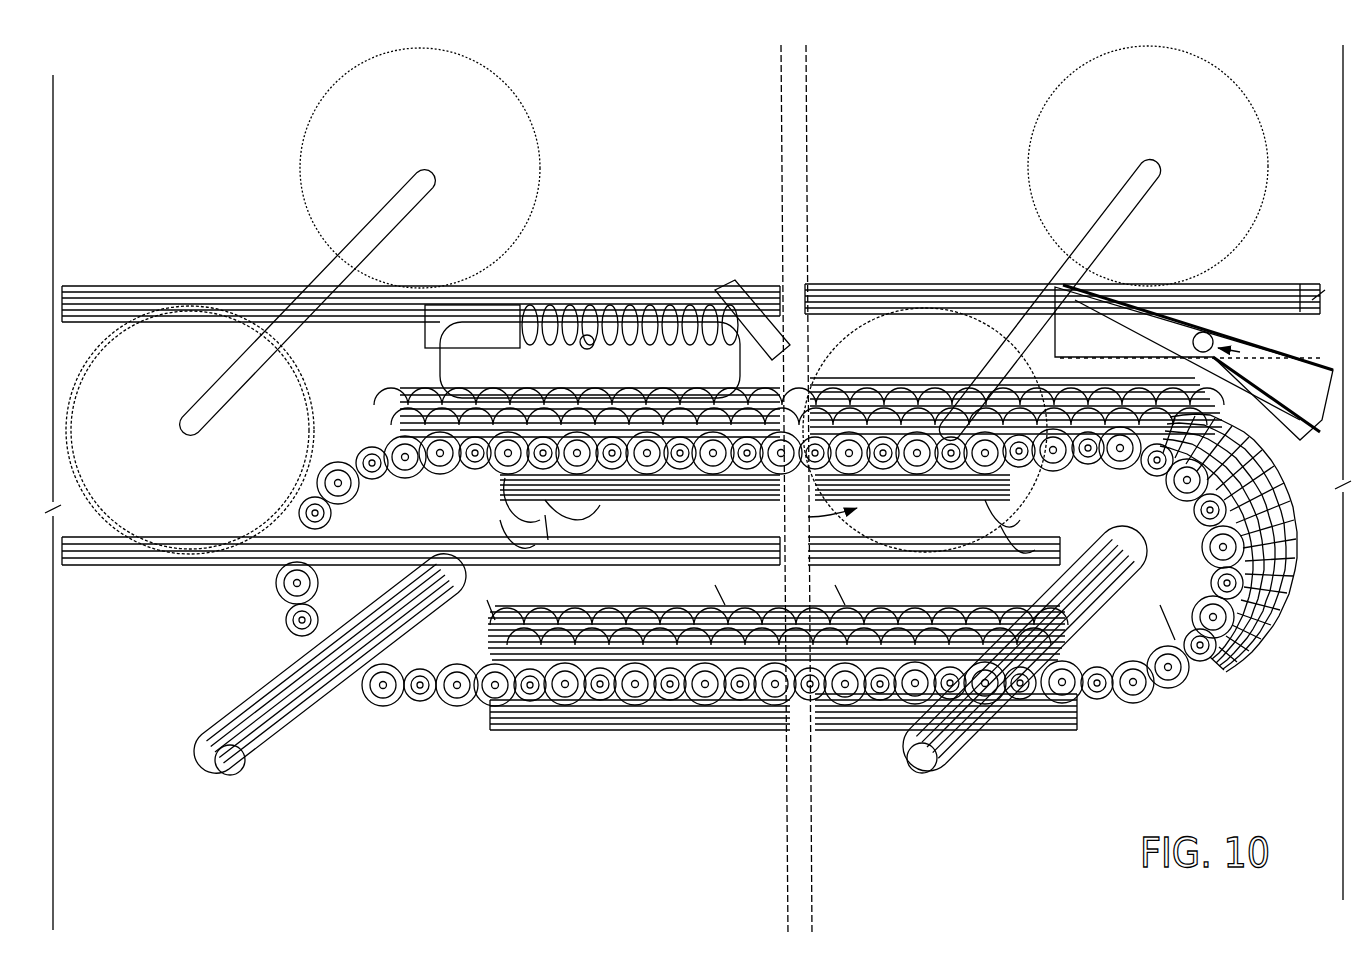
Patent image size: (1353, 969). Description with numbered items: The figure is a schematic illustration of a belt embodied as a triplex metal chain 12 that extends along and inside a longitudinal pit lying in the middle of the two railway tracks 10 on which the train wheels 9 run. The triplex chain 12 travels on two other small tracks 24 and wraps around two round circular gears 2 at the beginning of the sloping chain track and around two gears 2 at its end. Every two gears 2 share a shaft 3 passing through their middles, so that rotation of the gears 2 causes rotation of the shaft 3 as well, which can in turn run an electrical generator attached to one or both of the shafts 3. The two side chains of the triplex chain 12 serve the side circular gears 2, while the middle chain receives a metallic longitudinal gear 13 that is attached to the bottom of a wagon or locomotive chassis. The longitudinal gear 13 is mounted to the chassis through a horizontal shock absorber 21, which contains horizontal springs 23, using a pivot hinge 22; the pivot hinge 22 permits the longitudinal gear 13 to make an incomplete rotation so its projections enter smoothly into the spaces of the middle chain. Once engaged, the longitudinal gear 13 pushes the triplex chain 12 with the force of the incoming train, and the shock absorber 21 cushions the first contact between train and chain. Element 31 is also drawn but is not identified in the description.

The circular gear 2 is at (525, 700).
The shaft 3 is at (300, 730).
The train wheel 9 is at (190, 350).
The train railway tracks 10 is at (150, 283).
The triplex chain 12 is at (1266, 618).
The longitudinal gear 13 is at (614, 380).
The horizontal shock absorber 21 is at (505, 317).
The pivot hinge 22 is at (573, 340).
The horizontal springs 23 is at (625, 313).
The small track 24 is at (752, 514).
The roller 31 is at (385, 710).